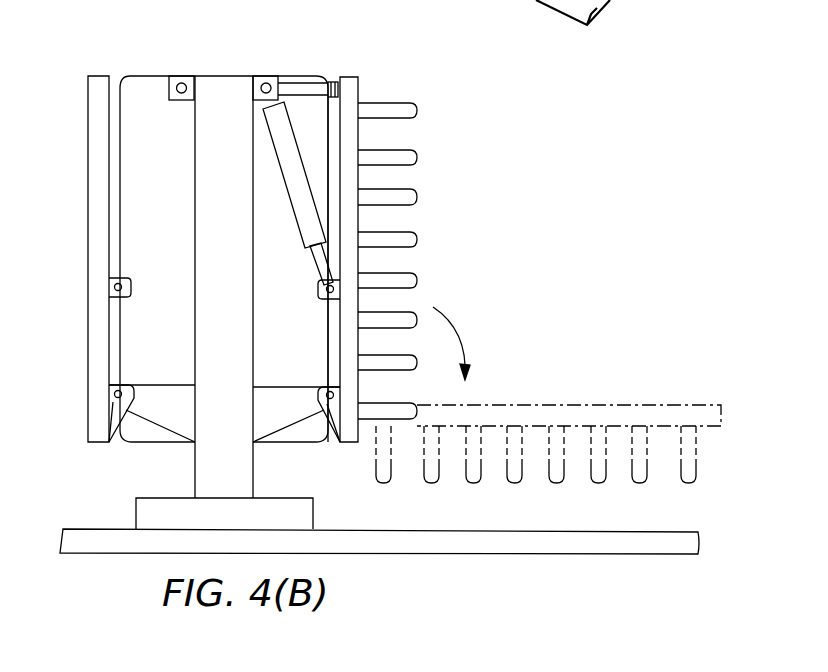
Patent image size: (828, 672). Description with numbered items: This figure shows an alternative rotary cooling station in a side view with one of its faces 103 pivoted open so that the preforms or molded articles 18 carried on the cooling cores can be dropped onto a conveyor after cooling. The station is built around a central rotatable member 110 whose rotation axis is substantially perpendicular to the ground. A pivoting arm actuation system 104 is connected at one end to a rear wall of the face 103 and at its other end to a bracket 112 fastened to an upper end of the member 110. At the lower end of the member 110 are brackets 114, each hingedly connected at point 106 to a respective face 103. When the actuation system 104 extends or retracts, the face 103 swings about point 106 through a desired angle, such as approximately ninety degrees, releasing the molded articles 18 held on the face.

The molded articles 18 is at (418, 197).
The face 103 is at (355, 80).
The pivoting arm actuation system 104 is at (289, 124).
The point 106 is at (328, 392).
The central rotatable member 110 is at (203, 223).
The bracket 112 is at (265, 76).
The brackets 114 is at (285, 418).